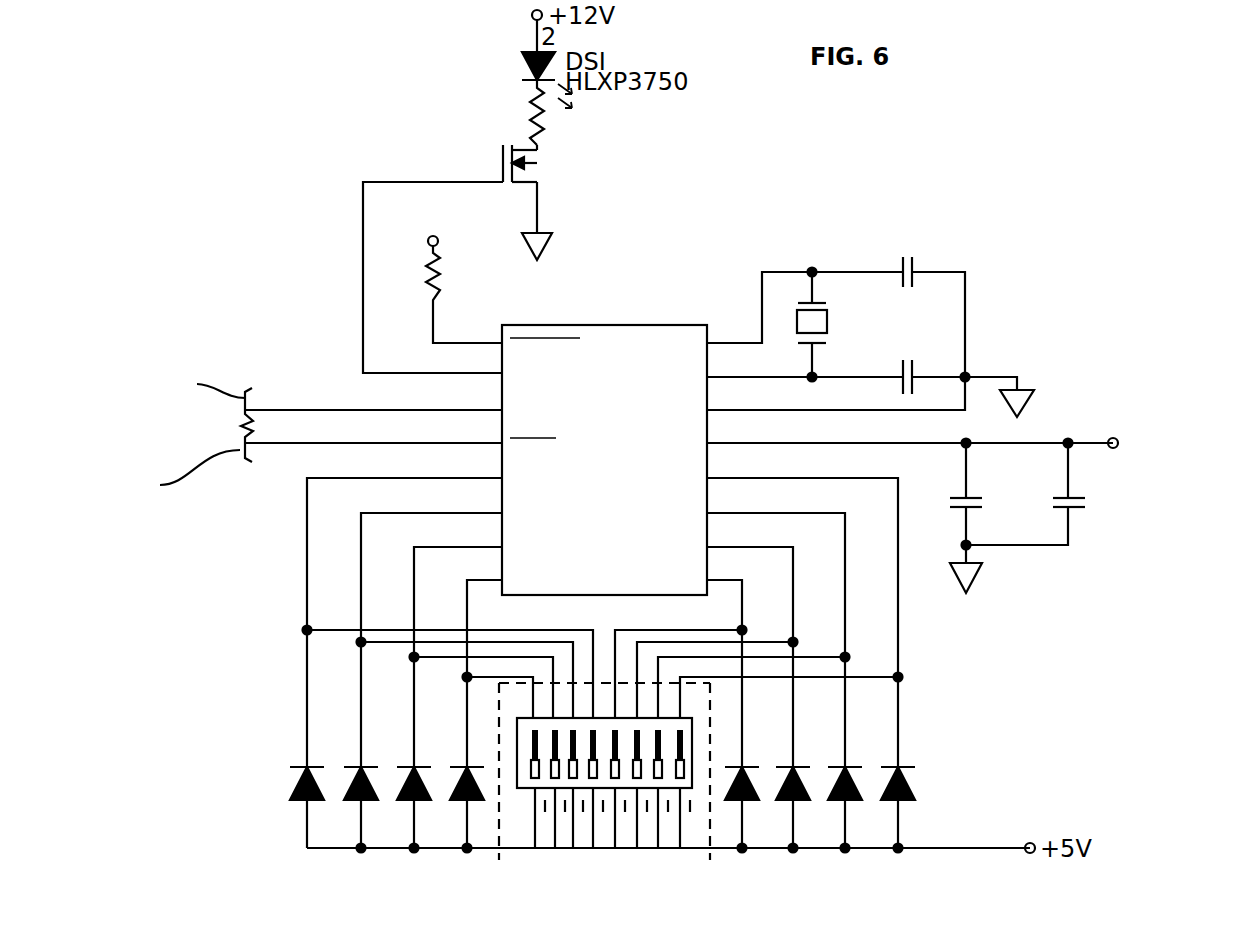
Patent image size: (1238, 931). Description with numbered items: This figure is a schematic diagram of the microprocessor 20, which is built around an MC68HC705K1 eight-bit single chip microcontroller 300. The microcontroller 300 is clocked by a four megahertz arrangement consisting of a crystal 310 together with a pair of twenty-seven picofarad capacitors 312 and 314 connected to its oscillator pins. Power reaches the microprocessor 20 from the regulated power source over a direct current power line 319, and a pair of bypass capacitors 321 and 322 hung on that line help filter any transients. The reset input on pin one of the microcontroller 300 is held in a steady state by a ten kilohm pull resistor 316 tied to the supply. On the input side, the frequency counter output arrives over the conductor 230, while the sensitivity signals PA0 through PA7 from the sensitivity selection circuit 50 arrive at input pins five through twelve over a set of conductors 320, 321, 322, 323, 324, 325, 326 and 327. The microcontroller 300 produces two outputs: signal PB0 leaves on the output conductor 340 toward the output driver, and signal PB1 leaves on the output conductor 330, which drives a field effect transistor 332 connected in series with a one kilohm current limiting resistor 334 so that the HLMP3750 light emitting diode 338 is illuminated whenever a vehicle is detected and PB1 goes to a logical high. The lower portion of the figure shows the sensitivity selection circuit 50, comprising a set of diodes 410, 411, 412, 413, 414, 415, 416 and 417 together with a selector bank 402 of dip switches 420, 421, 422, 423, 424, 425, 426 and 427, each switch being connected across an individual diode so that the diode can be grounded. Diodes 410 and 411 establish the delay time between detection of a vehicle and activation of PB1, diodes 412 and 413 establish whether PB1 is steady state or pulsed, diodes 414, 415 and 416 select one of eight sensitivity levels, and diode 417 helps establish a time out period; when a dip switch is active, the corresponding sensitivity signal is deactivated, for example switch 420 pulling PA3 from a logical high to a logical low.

The microprocessor 20 is at (1004, 243).
The sensitivity selection circuit 50 is at (236, 616).
The conductor 230 is at (304, 443).
The microcontroller 300 is at (586, 325).
The crystal 310 is at (797, 312).
The capacitor 312 is at (900, 284).
The capacitor 314 is at (912, 386).
The pull resistor 316 is at (430, 266).
The direct current power line 319 is at (1087, 443).
The conductor 320 is at (306, 530).
The bypass capacitor 321 is at (360, 560).
The bypass capacitor 322 is at (515, 685).
The conductor 323 is at (530, 712).
The conductor 324 is at (742, 597).
The conductor 325 is at (793, 605).
The conductor 326 is at (845, 628).
The conductor 327 is at (898, 667).
The output conductor 330 is at (363, 252).
The field effect transistor 332 is at (503, 148).
The current limiting resistor 334 is at (532, 112).
The light emitting diode 338 is at (522, 62).
The output conductor 340 is at (312, 410).
The selector bank 402 is at (625, 789).
The diode 410 is at (296, 785).
The diode 411 is at (346, 800).
The diode 412 is at (405, 800).
The diode 413 is at (458, 805).
The diode 414 is at (905, 758).
The diode 415 is at (806, 800).
The diode 416 is at (856, 800).
The diode 417 is at (912, 815).
The dip switch 420 is at (535, 745).
The dip switch 421 is at (555, 738).
The dip switch 422 is at (573, 734).
The dip switch 423 is at (596, 733).
The dip switch 424 is at (617, 736).
The dip switch 425 is at (638, 740).
The dip switch 426 is at (660, 745).
The dip switch 427 is at (728, 818).